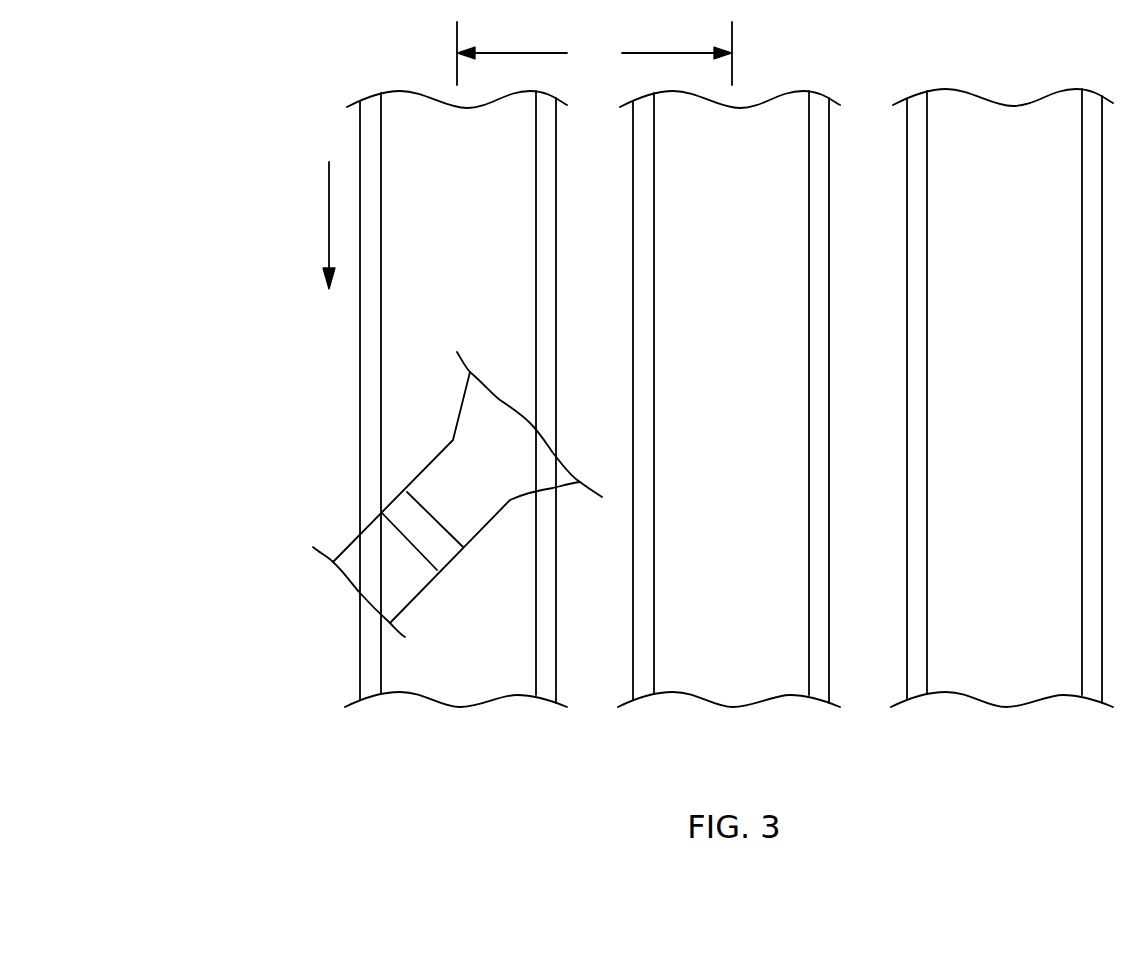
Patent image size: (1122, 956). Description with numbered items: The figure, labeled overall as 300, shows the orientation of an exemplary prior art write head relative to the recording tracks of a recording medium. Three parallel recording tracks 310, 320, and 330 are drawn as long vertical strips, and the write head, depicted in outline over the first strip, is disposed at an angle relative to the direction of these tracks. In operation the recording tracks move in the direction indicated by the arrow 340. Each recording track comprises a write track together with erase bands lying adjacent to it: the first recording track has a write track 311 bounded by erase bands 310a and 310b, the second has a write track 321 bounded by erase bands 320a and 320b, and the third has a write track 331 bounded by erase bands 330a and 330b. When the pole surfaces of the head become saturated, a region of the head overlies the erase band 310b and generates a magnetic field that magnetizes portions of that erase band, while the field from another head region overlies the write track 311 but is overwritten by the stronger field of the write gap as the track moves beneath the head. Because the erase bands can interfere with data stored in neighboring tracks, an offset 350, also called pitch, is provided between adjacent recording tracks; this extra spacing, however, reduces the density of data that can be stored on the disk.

The antenna system 300 is at (163, 139).
The recording track 310 is at (458, 708).
The erase band 310a is at (372, 688).
The erase band 310b is at (547, 688).
The write track 311 is at (457, 505).
The recording track 320 is at (732, 708).
The erase band 320a is at (645, 688).
The erase band 320b is at (820, 688).
The write track 321 is at (730, 645).
The recording track 330 is at (1005, 708).
The erase band 330a is at (917, 688).
The erase band 330b is at (1093, 688).
The write track 331 is at (1002, 645).
The arrow 340 is at (303, 225).
The offset 350 is at (594, 53).